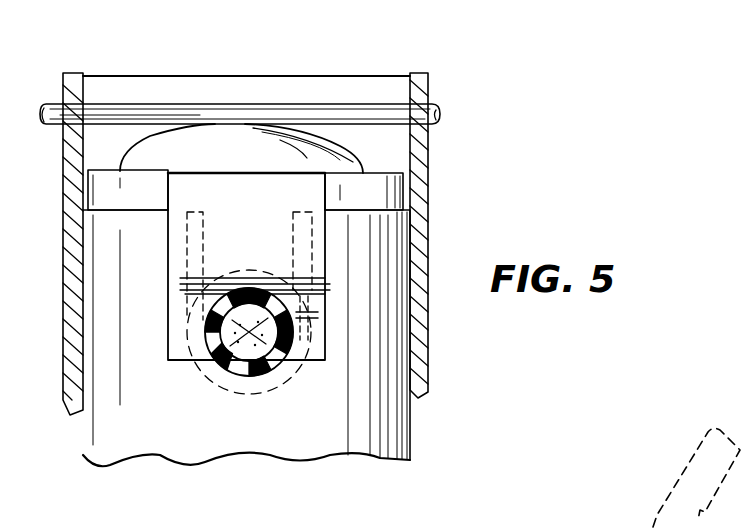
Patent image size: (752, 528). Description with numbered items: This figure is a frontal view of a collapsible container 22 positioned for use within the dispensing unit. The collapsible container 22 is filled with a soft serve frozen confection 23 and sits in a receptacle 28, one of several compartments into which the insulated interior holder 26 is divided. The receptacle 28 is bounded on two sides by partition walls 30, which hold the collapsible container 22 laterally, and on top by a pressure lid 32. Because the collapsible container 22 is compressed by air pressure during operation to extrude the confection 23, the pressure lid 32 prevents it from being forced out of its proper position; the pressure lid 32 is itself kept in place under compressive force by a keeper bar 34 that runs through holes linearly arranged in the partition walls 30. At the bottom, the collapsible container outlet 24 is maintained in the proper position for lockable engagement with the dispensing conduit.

The collapsible container 22 is at (412, 431).
The soft serve frozen confection 23 is at (255, 378).
The collapsible container outlet 24 is at (305, 313).
The insulated interior holder 26 is at (283, 87).
The receptacle 28 is at (121, 89).
The partition walls 30 is at (429, 233).
The pressure lid 32 is at (364, 166).
The keeper bar 34 is at (438, 110).